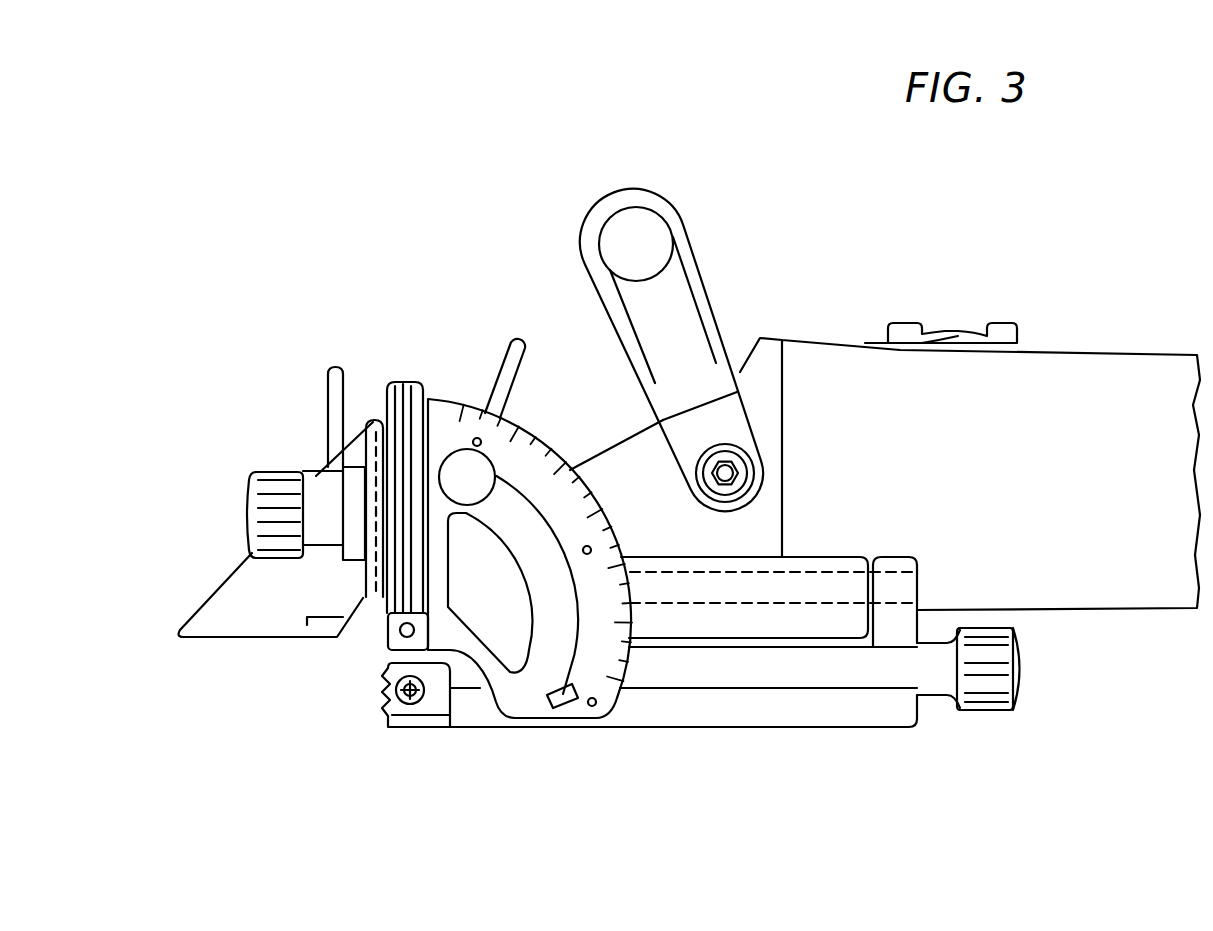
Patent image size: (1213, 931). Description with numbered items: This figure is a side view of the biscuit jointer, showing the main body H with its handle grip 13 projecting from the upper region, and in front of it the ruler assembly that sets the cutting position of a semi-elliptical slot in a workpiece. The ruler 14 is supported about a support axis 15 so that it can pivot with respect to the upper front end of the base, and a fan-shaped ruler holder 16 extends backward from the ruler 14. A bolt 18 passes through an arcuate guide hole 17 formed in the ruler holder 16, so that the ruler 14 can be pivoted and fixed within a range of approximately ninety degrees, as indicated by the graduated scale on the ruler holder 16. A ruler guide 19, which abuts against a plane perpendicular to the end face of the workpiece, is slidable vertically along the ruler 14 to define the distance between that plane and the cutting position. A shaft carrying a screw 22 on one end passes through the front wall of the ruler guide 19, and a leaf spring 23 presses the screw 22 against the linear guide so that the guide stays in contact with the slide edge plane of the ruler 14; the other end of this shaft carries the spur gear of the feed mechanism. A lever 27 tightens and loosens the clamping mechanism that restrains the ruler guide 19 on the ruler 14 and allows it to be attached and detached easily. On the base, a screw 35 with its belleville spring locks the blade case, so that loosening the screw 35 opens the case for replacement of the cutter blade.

The handle grip 13 is at (657, 232).
The ruler 14 is at (397, 386).
The support axis 15 is at (400, 632).
The ruler holder 16 is at (510, 700).
The guide hole 17 is at (562, 700).
The bolt 18 is at (477, 470).
The ruler guide 19 is at (222, 603).
The screw 22 is at (265, 515).
The leaf spring 23 is at (353, 473).
The lever 27 is at (327, 395).
The screw 35 is at (943, 683).
The main body H is at (842, 300).